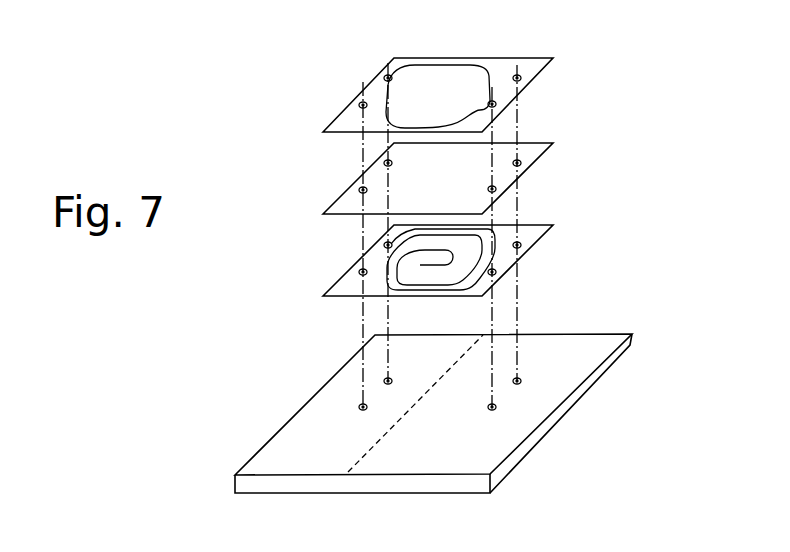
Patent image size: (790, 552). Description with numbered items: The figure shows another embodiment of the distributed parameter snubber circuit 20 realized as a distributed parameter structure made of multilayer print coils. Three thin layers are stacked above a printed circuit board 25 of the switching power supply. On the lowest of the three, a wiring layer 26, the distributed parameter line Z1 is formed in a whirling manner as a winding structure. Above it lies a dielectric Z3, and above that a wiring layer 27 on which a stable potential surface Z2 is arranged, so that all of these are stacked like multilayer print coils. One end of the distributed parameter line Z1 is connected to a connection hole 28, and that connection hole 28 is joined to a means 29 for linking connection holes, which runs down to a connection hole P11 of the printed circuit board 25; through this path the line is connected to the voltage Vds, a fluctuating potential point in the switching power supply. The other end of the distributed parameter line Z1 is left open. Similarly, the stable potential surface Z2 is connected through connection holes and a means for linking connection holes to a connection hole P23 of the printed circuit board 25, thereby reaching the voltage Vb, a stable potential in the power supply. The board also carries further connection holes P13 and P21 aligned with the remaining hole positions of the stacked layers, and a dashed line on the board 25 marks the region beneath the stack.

The distributed parameter snubber circuit 20 is at (625, 80).
The printed circuit board 25 is at (412, 413).
The wiring layer 26 is at (420, 245).
The wiring layer 27 is at (430, 79).
The connection hole 28 is at (383, 243).
The means for linking connection holes 29 is at (390, 321).
The distributed parameter line Z1 is at (500, 224).
The stable potential surface Z2 is at (488, 58).
The dielectric Z3 is at (538, 142).
The connection hole P11 is at (409, 368).
The terminal point P13 is at (352, 423).
The terminal point P21 is at (538, 368).
The connection hole P23 is at (492, 423).